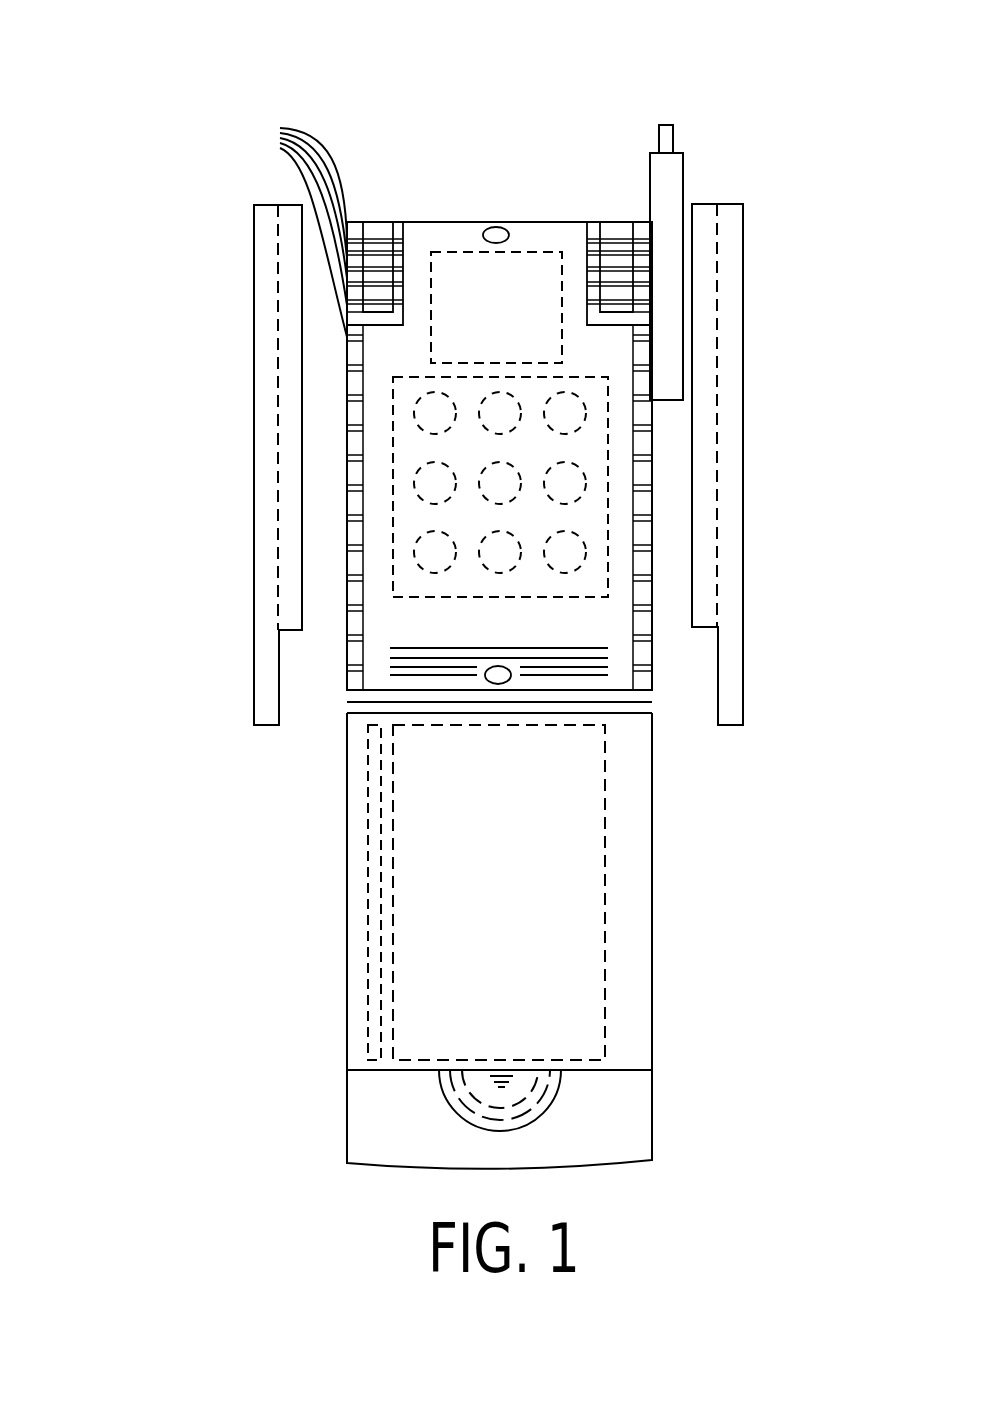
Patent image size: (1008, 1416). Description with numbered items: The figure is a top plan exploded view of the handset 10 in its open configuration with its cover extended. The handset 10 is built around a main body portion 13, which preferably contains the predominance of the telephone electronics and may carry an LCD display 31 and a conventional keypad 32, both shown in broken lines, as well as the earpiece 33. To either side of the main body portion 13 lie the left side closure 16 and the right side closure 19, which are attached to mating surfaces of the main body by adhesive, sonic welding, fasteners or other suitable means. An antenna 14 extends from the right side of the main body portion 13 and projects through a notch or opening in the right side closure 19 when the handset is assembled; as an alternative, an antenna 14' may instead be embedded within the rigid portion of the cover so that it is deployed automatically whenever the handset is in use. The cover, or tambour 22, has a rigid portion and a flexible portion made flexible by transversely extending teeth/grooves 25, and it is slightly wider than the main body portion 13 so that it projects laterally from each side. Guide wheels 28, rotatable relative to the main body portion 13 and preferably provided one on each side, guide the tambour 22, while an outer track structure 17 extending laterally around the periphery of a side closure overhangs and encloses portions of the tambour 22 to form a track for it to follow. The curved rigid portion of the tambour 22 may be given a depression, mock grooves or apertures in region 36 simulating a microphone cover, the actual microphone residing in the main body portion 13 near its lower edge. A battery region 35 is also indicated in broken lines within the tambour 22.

The handset 10 is at (180, 108).
The main body portion 13 is at (617, 663).
The antenna 14 is at (754, 251).
The embedded antenna 14' is at (278, 892).
The left side closure 16 is at (272, 480).
The outer track structure 17 is at (292, 370).
The right side closure 19 is at (730, 480).
The tambour 22 is at (636, 950).
The teeth/grooves 25 is at (288, 228).
The guide wheels 28 is at (378, 228).
The LCD display 31 is at (513, 285).
The keypad 32 is at (432, 413).
The earpiece 33 is at (492, 228).
The battery 35 is at (565, 883).
The microphone cover region 36 is at (587, 1115).